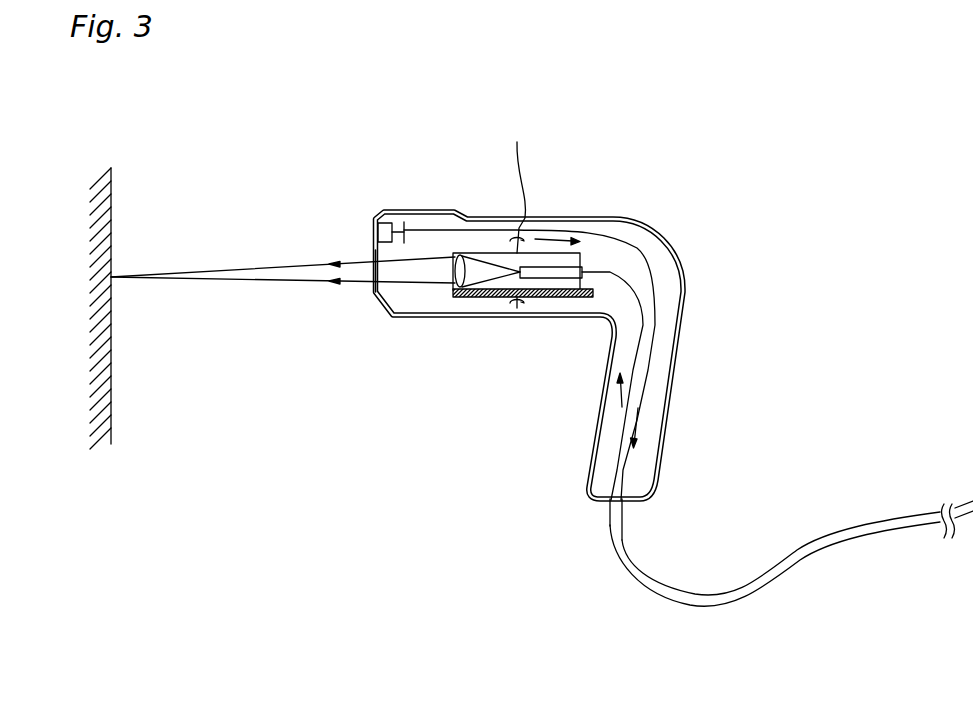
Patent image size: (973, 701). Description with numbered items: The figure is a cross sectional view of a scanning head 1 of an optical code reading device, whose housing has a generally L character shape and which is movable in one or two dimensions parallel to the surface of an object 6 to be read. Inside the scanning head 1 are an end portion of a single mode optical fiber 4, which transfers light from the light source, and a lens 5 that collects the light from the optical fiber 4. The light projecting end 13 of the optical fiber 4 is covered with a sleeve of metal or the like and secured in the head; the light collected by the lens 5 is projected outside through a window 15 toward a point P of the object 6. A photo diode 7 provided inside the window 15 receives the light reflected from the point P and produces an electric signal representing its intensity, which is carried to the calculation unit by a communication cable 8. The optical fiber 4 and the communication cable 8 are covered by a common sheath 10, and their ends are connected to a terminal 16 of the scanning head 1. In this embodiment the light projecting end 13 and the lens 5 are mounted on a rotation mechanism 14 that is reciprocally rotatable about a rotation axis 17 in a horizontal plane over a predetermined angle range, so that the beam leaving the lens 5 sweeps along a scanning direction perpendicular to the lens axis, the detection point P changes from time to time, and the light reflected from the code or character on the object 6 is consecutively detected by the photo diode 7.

The scanning head 1 is at (684, 272).
The single mode optical fiber 4 is at (617, 436).
The lens 5 is at (465, 290).
The object 6 is at (111, 288).
The photo diode 7 is at (386, 233).
The communication cable 8 is at (650, 357).
The sheath 10 is at (902, 537).
The light projecting end 13 is at (543, 270).
The rotation mechanism 14 is at (593, 289).
The window 15 is at (374, 271).
The terminal 16 is at (621, 505).
The rotation axis 17 is at (523, 213).
The point P is at (283, 263).